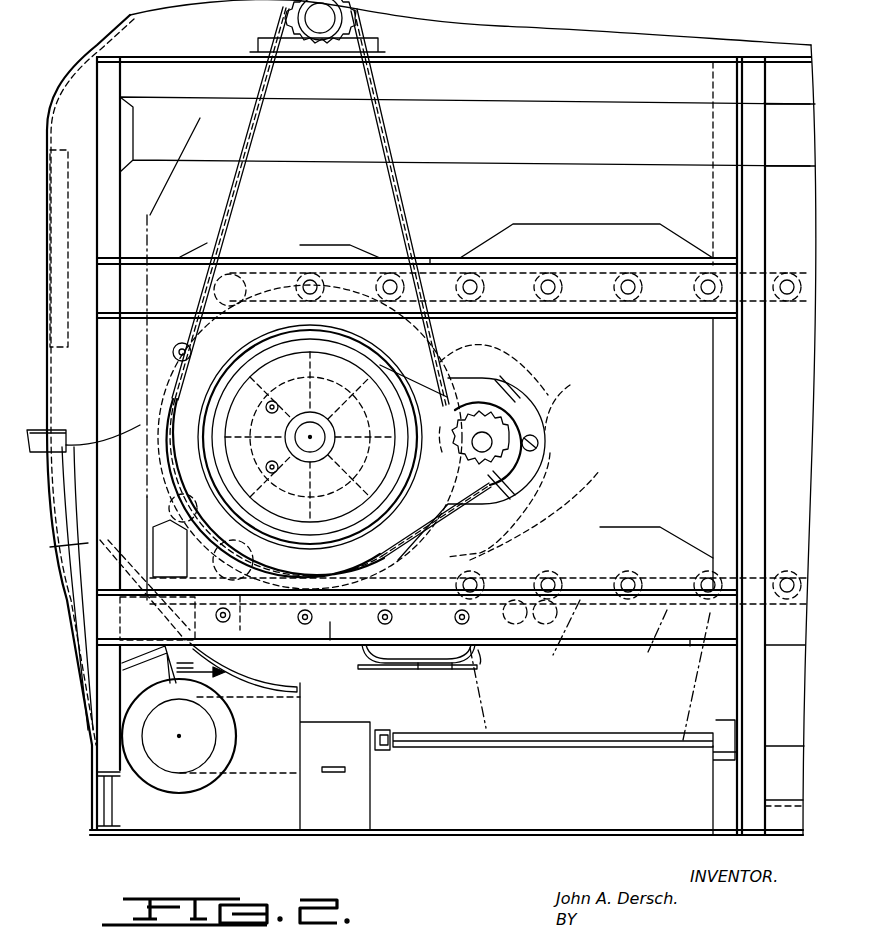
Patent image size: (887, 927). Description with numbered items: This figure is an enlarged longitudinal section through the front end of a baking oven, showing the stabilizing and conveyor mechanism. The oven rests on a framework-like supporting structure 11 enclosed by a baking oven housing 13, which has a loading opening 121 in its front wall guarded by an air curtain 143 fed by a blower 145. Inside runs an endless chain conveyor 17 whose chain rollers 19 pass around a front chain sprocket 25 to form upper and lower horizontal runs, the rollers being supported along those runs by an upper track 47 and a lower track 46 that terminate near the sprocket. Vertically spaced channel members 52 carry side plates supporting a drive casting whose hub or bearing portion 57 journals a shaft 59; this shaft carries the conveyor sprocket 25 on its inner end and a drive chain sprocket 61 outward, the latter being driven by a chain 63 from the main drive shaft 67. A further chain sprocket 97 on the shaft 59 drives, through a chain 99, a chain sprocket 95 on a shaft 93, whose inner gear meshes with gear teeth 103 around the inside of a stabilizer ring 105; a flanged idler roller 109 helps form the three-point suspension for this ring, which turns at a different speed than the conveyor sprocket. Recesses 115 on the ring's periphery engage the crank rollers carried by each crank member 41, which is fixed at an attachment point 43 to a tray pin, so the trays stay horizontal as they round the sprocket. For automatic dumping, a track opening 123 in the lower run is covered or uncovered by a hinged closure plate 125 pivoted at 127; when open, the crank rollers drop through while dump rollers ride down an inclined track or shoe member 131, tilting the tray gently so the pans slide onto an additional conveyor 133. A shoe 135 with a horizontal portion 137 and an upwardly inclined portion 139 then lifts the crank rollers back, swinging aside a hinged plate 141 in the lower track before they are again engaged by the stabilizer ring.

The supporting structure 11 is at (770, 462).
The baking oven housing 13 is at (100, 46).
The endless conveyor 17 is at (497, 286).
The chain roller 19 is at (312, 272).
The chain sprocket 25 is at (168, 470).
The crank member 41 is at (230, 614).
The point of attachment 43 is at (219, 608).
The lower track 46 is at (700, 645).
The upper track 47 is at (657, 320).
The channel member 52 is at (432, 262).
The hub or bearing portion 57 is at (336, 437).
The shaft 59 is at (325, 432).
The drive chain sprocket 61 is at (172, 357).
The chain 63 is at (378, 80).
The main drive shaft 67 is at (318, 28).
The shaft 93 is at (492, 438).
The chain sprocket 95 is at (486, 436).
The chain sprocket 97 is at (491, 486).
The chain 99 is at (438, 508).
The gear teeth 103 is at (512, 334).
The stabilizer ring 105 is at (570, 385).
The flanged idler roller 109 is at (316, 437).
The recess 115 is at (550, 453).
The opening 121 is at (40, 430).
The track opening 123 is at (535, 516).
The closure plate 125 is at (570, 630).
The hinge 127 is at (488, 655).
The inclined track or shoe member 131 is at (452, 670).
The additional conveyor 133 is at (566, 755).
The shoe 135 is at (365, 665).
The horizontal portion 137 is at (418, 670).
The upwardly inclined portion 139 is at (362, 652).
The hinged plate 141 is at (328, 626).
The air curtain 143 is at (280, 420).
The blower 145 is at (148, 738).